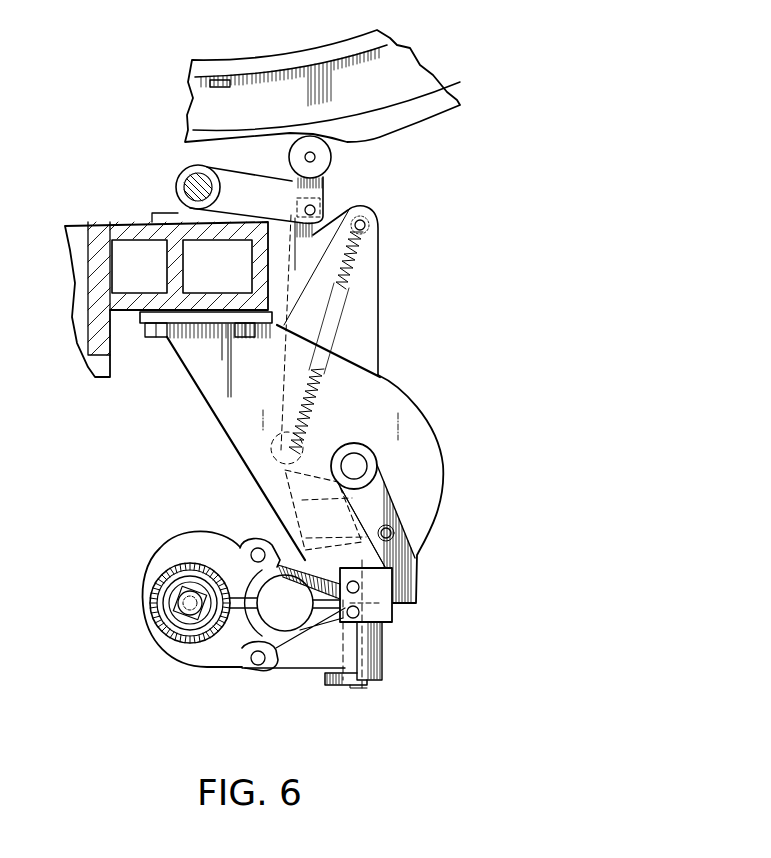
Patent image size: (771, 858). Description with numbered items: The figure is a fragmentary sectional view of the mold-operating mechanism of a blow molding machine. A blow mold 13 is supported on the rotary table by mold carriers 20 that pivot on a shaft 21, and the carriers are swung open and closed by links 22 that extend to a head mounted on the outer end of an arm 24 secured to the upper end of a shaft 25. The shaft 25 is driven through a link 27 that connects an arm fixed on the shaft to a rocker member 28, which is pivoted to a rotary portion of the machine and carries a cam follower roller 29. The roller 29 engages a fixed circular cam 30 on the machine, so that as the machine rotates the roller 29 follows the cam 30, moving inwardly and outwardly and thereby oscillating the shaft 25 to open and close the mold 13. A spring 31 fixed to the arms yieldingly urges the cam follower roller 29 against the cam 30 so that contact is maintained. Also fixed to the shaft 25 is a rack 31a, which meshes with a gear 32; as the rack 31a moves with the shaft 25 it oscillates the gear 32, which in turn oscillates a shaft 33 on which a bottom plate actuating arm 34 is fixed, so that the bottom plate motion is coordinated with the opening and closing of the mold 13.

The blow mold 13 is at (185, 562).
The mold carrier 20 is at (195, 663).
The shaft 21 is at (196, 533).
The link 22 is at (250, 540).
The arm 24 is at (390, 576).
The shaft 25 is at (355, 467).
The link 27 is at (345, 210).
The rocker member 28 is at (258, 198).
The cam follower roller 29 is at (318, 153).
The fixed circular cam 30 is at (400, 115).
The spring 31 is at (350, 303).
The rack 31a is at (337, 500).
The gear 32 is at (380, 462).
The shaft 33 is at (357, 686).
The bottom plate actuating arm 34 is at (327, 670).